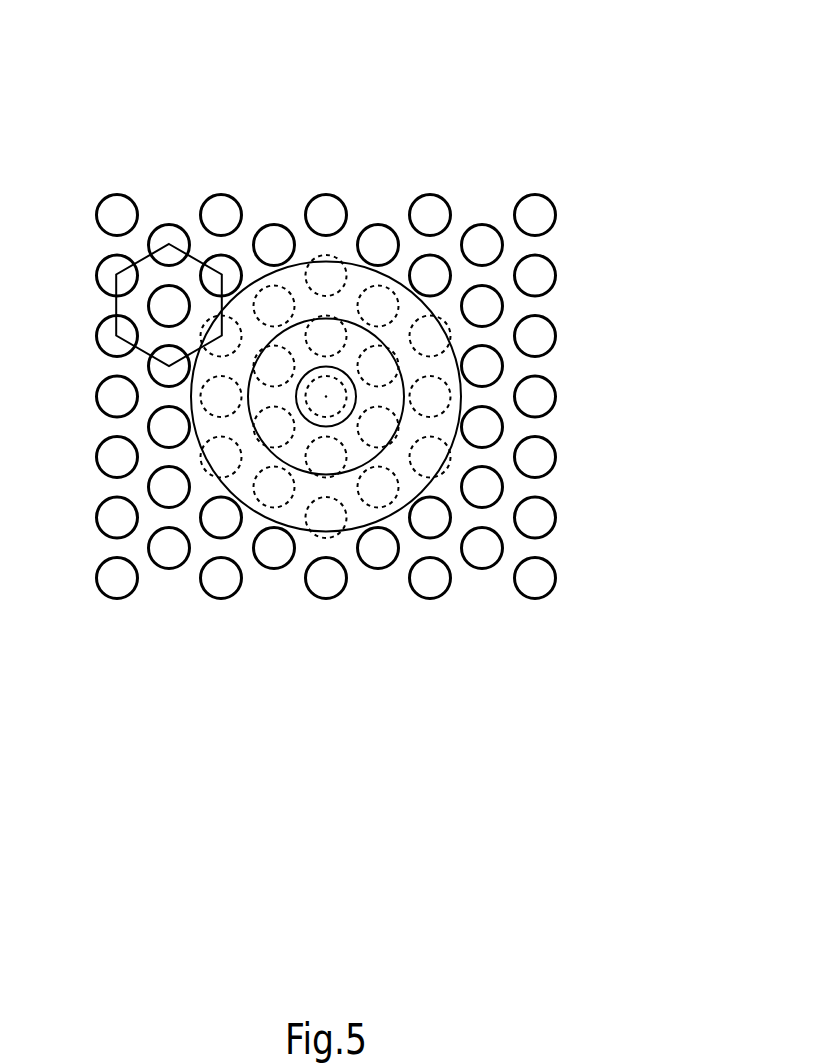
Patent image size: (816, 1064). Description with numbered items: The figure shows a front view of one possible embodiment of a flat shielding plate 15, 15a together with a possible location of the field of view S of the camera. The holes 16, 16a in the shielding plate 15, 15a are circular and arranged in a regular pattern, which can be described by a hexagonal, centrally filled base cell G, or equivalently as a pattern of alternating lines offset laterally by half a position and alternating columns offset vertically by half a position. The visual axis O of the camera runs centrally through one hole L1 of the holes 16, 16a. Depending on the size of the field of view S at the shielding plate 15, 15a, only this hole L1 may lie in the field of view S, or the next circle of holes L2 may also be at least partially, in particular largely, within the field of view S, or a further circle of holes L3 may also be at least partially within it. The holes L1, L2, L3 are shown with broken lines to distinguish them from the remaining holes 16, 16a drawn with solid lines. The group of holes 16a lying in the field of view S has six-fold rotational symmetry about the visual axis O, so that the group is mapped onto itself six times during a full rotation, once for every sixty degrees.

The shielding plate 15 is at (358, 327).
The shielding plate 15a is at (584, 142).
The holes 16 is at (378, 397).
The holes 16a is at (536, 578).
The hexagonal, centrally filled base cell G is at (118, 304).
The visual axis O is at (327, 392).
The hole L1 is at (352, 397).
The next circle of holes L2 is at (457, 432).
The further circle of holes L3 is at (217, 390).
The field of view S is at (384, 425).